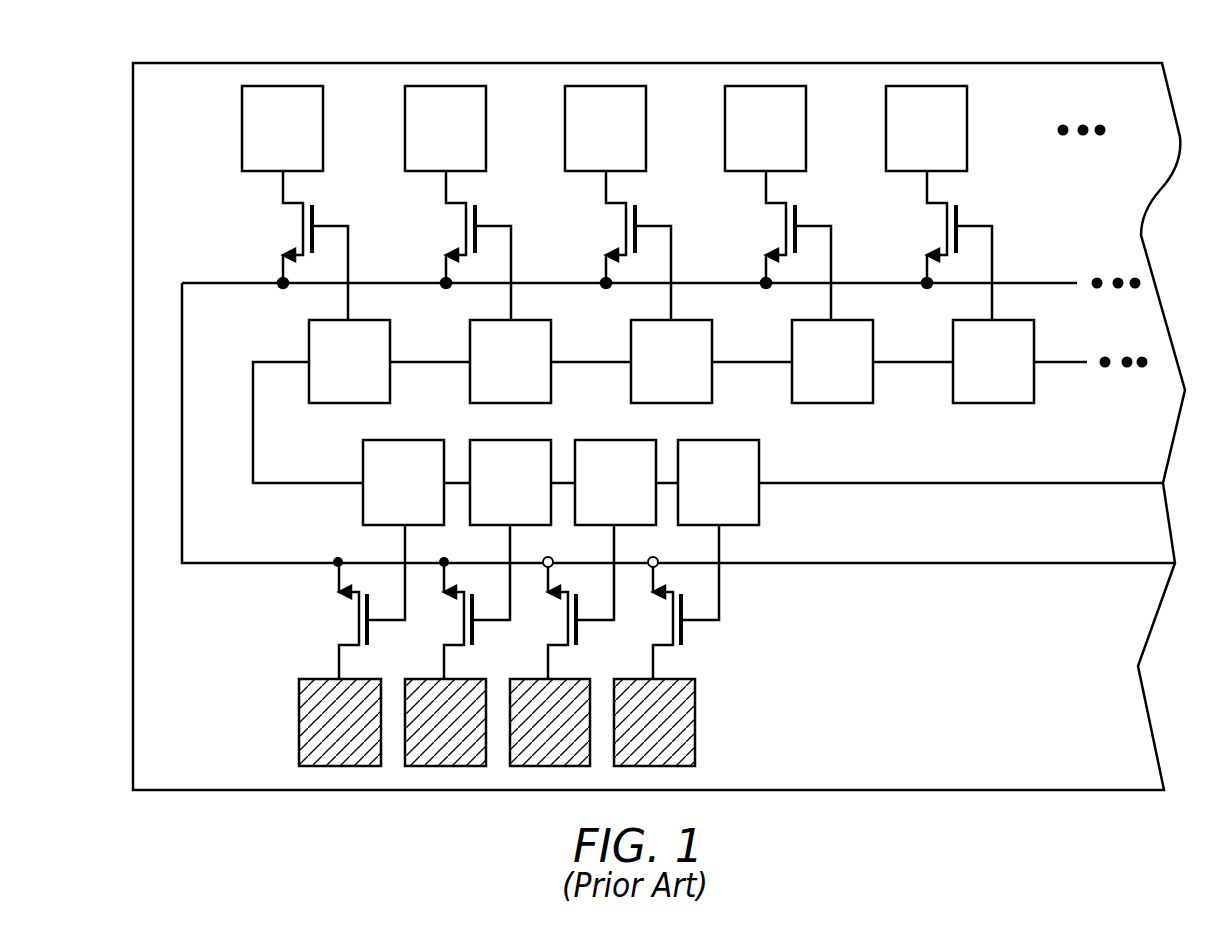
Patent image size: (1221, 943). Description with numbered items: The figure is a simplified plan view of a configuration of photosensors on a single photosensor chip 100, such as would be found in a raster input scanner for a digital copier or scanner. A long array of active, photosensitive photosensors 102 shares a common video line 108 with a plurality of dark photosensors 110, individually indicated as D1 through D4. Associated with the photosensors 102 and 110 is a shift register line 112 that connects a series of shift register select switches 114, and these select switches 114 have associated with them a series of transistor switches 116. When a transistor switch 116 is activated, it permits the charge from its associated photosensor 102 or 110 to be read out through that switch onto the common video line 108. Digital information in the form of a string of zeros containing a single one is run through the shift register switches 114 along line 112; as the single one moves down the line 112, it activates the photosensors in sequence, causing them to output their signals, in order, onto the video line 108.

The photosensor chip 100 is at (132, 300).
The active photosensors 102 is at (581, 127).
The common video line 108 is at (1000, 563).
The dark photosensors 110 is at (496, 704).
The shift register line 112 is at (1047, 483).
The shift register select switches 114 is at (700, 325).
The transistor switches 116 is at (635, 425).